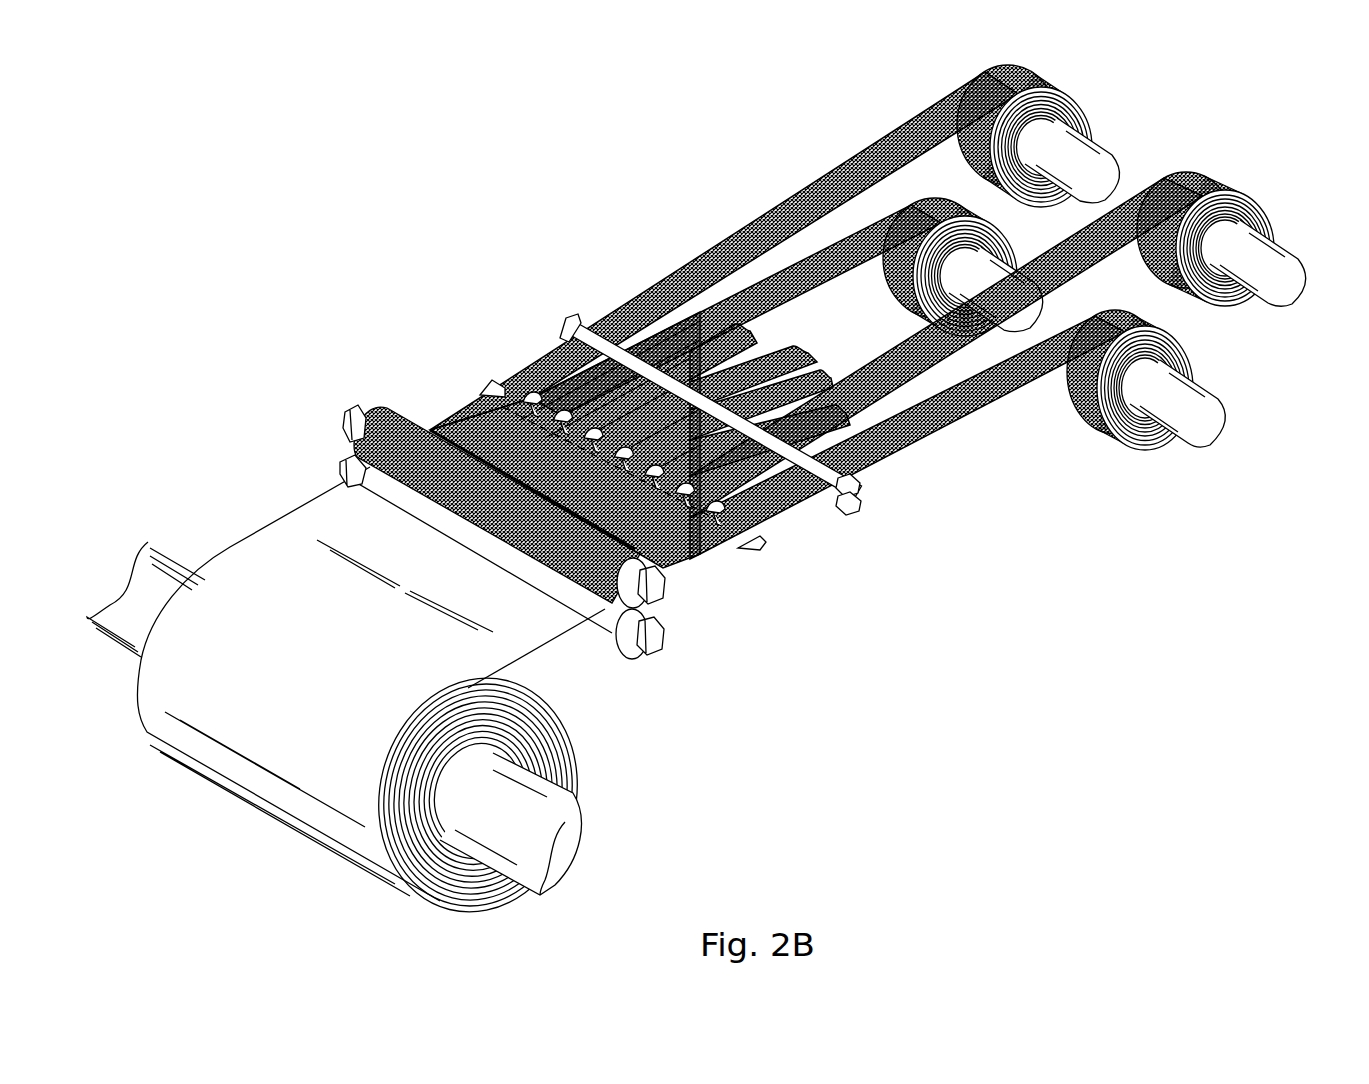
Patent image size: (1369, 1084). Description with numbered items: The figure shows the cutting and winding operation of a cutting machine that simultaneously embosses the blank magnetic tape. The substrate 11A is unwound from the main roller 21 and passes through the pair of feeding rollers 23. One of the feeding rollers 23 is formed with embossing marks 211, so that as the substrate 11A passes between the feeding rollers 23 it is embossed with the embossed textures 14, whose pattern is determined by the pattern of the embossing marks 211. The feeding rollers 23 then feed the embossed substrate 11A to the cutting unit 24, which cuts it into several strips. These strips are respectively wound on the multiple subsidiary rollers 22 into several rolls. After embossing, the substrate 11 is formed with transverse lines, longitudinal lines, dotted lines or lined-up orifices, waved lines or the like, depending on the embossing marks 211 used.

The substrate 11 is at (906, 462).
The substrate 11A is at (283, 540).
The embossed textures 14 is at (1062, 338).
The main roller 21 is at (553, 822).
The embossing marks 211 is at (413, 420).
The subsidiary rollers 22 is at (1265, 305).
The feeding rollers 23 is at (668, 632).
The cutting unit 24 is at (535, 395).